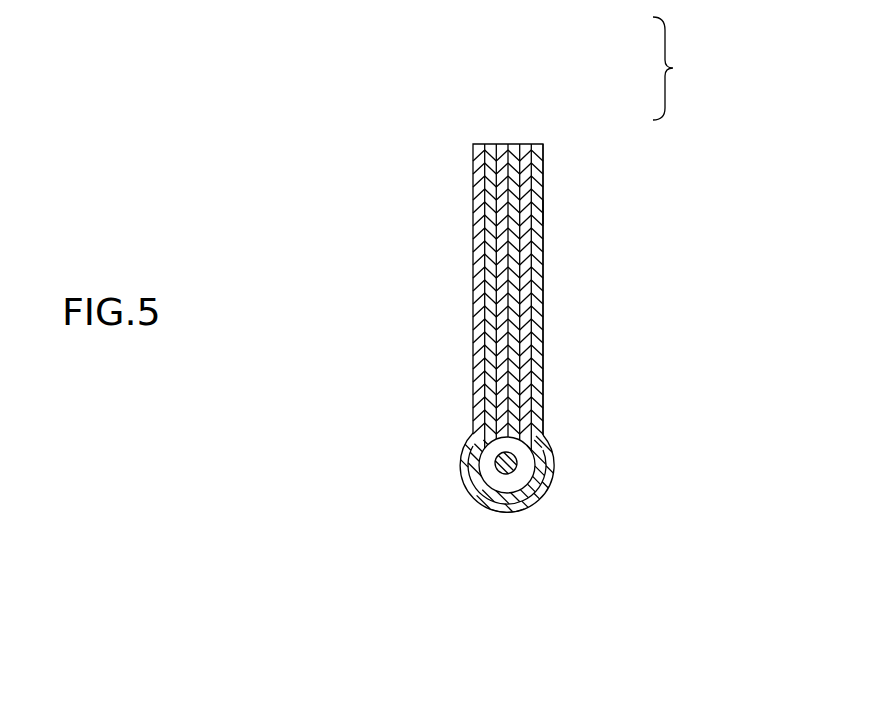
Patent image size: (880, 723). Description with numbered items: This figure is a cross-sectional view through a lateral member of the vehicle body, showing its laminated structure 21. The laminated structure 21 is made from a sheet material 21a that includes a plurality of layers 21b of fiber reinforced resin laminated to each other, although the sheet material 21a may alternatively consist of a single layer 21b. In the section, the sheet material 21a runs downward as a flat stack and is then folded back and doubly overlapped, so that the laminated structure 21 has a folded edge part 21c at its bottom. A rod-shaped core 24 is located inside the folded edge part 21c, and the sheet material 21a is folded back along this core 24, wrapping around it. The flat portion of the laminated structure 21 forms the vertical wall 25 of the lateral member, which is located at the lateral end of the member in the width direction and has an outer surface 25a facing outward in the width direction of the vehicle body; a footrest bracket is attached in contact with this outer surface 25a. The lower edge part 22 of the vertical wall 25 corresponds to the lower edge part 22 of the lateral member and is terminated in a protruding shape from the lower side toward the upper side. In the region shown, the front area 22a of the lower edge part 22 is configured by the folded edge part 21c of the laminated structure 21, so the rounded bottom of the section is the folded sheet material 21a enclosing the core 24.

The laminated structure 21 is at (543, 277).
The sheet material 21a is at (694, 68).
The layer 21b is at (514, 144).
The folded edge part 21c is at (474, 493).
The lower edge part 22 is at (545, 488).
The front area of the lower edge part 22a is at (512, 510).
The core 24 is at (490, 458).
The vertical wall 25 is at (543, 350).
The outer surface 25a is at (543, 212).